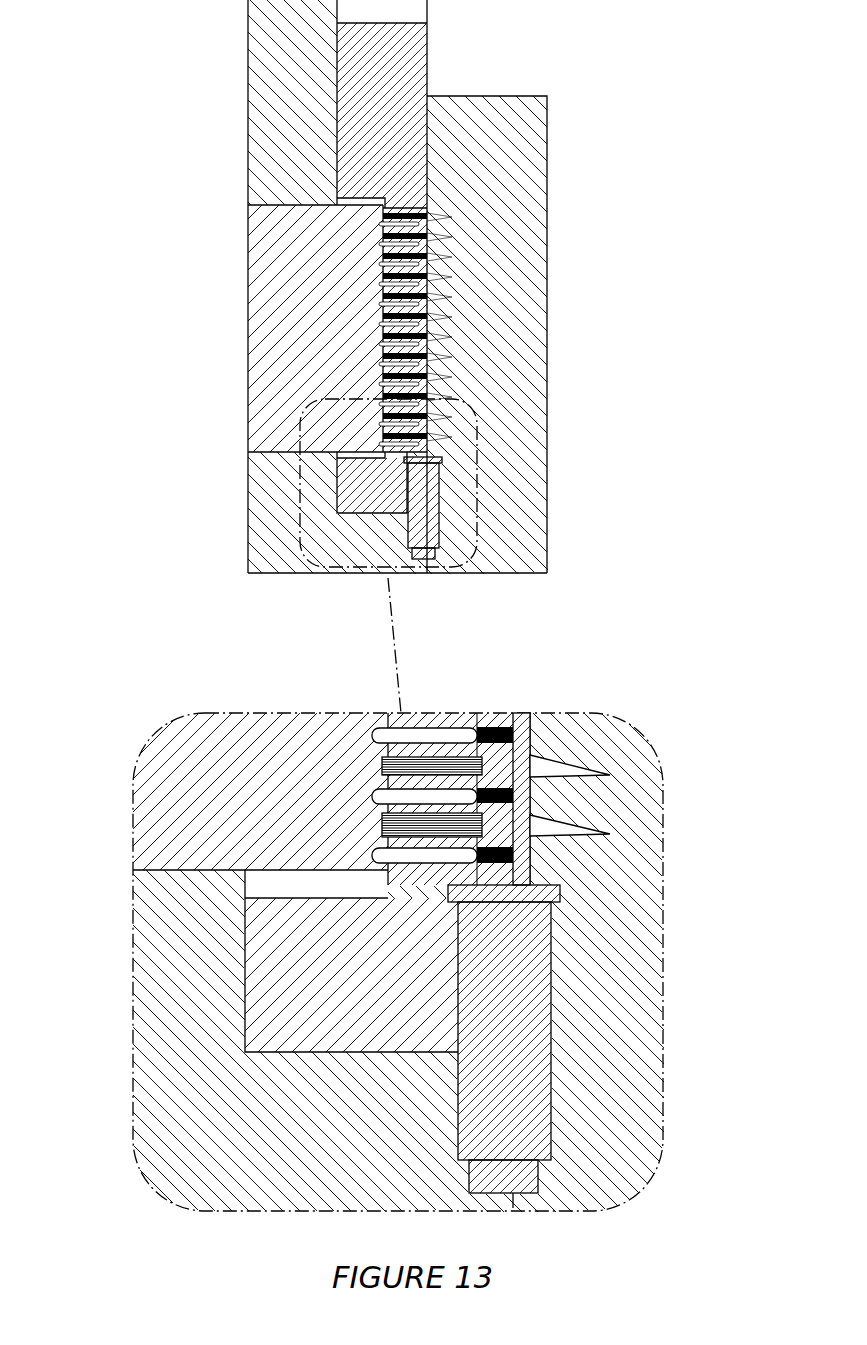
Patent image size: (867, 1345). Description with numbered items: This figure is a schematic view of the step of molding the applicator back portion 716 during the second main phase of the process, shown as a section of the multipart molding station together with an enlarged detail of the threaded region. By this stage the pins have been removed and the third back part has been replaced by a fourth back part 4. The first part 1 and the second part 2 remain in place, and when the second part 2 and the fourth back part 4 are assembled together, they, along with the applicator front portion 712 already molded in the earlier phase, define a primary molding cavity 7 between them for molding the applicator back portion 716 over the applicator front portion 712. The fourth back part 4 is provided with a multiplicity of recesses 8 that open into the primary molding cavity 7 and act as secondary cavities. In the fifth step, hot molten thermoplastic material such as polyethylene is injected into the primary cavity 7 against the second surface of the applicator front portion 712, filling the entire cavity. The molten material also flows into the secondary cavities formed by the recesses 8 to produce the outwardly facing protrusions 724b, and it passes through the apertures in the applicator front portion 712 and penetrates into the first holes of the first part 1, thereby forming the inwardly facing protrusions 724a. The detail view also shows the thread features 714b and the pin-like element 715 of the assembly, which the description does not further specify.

The first part 1 is at (165, 818).
The second part 2 is at (405, 62).
The fourth back part 4 is at (505, 118).
The primary molding cavity 7 is at (278, 290).
The recesses 8 is at (450, 240).
The applicator front portion 712 is at (523, 863).
The thread flank 714b is at (428, 762).
The pin 715 is at (530, 978).
The applicator back portion 716 is at (500, 873).
The inwardly facing protrusions 724a is at (385, 878).
The outwardly facing protrusions 724b is at (567, 837).